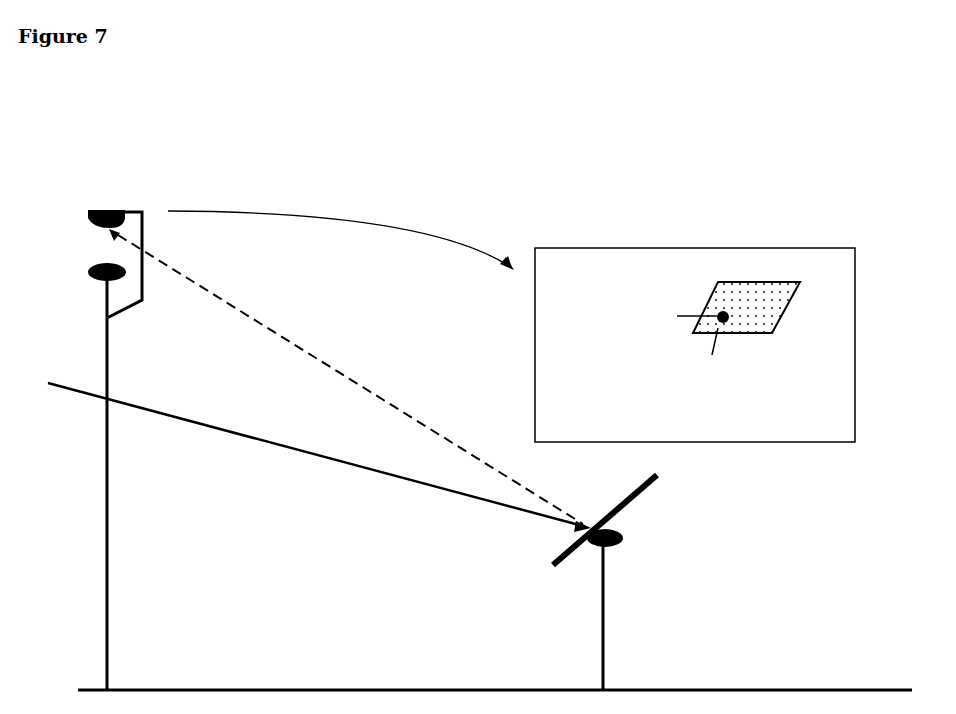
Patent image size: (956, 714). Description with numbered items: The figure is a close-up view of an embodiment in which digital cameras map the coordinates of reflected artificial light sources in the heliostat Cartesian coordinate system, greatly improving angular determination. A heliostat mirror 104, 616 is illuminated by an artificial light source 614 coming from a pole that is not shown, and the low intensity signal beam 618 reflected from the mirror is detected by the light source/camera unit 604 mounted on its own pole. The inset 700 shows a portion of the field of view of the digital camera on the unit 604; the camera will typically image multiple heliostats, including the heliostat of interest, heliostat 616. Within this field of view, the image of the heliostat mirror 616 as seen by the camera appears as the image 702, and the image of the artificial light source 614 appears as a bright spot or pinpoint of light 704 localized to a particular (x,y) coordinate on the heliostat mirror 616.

The light source/camera unit 604 is at (91, 197).
The low intensity signal beam 618 is at (380, 388).
The artificial light source 614 is at (288, 465).
The heliostat mirror 104 is at (663, 492).
The heliostat mirror 616 is at (673, 485).
The inset 700 is at (695, 326).
The image of the heliostat mirror 702 is at (757, 347).
The bright spot 704 is at (712, 322).